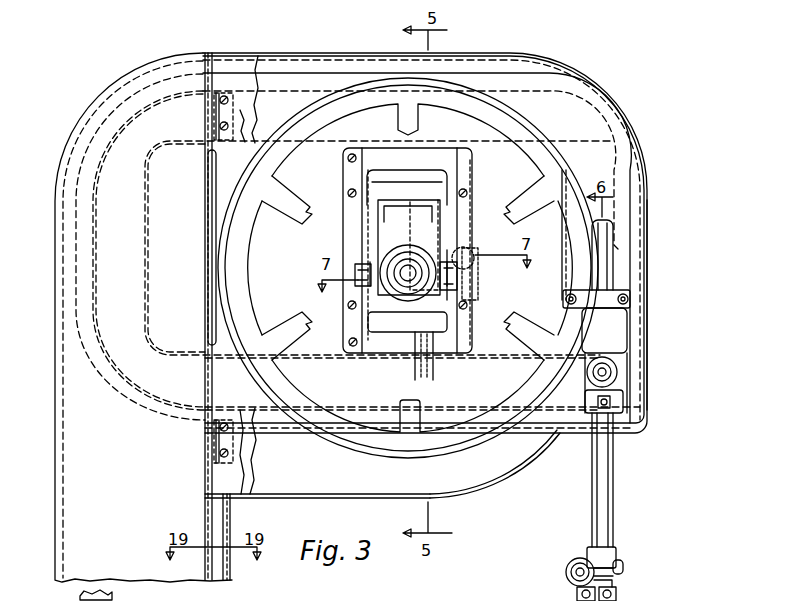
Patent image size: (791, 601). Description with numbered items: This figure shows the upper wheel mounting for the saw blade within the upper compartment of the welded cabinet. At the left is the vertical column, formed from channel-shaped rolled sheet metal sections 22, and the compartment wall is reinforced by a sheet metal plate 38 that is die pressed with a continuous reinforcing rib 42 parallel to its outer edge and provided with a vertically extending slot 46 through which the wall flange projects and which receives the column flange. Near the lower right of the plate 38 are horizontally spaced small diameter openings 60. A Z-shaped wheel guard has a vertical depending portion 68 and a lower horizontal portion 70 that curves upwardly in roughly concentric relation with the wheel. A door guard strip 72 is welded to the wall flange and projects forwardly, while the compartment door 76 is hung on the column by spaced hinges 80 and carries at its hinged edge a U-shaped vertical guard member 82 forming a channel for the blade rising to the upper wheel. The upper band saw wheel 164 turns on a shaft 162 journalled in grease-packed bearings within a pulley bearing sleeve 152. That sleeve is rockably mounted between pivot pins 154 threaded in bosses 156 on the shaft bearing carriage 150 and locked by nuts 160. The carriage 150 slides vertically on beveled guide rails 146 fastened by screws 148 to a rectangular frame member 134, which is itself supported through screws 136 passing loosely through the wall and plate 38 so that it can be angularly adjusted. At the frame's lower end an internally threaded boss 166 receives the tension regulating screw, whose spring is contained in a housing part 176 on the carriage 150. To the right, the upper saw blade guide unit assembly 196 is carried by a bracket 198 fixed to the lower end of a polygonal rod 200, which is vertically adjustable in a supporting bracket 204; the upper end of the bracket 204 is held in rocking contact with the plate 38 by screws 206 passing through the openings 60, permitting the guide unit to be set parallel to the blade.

The rolled sheet metal section 22 is at (134, 472).
The sheet metal plate 38 is at (607, 110).
The reinforcing rib 42 is at (250, 123).
The vertically extending slot 46 is at (216, 180).
The small diameter openings 60 is at (115, 593).
The vertical depending portion 68 is at (349, 488).
The lower horizontal portion 70 is at (487, 483).
The door guard strip 72 is at (648, 160).
The compartment door 76 is at (237, 470).
The hinges 80 is at (205, 112).
The vertical guard member 82 is at (222, 563).
The rectangular frame member 134 is at (467, 340).
The screws 136 is at (354, 346).
The guide rails 146 is at (357, 213).
The screws 148 is at (468, 193).
The shaft bearing carriage 150 is at (437, 192).
The pulley bearing sleeve 152 is at (420, 263).
The pivot pins 154 is at (460, 280).
The bosses 156 is at (468, 298).
The nuts 160 is at (357, 262).
The shaft 162 is at (405, 296).
The upper band saw wheel 164 is at (522, 150).
The internally threaded boss 166 is at (427, 345).
The housing part 176 is at (410, 223).
The upper saw blade guide unit assembly 196 is at (615, 595).
The bracket 198 is at (613, 552).
The rod 200 is at (608, 473).
The supporting bracket 204 is at (611, 334).
The screws 206 is at (627, 300).